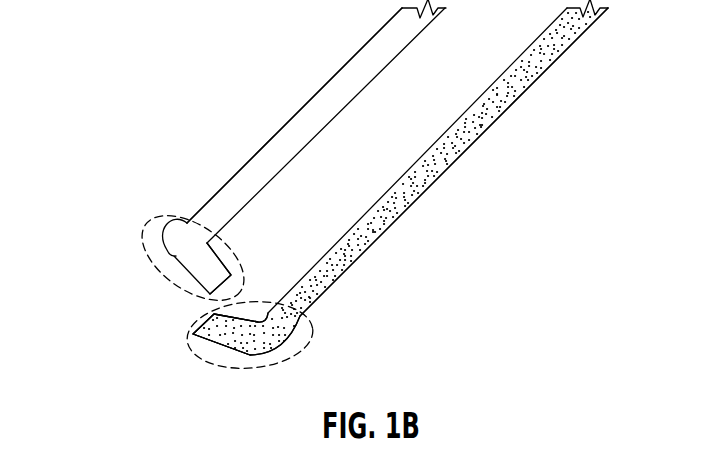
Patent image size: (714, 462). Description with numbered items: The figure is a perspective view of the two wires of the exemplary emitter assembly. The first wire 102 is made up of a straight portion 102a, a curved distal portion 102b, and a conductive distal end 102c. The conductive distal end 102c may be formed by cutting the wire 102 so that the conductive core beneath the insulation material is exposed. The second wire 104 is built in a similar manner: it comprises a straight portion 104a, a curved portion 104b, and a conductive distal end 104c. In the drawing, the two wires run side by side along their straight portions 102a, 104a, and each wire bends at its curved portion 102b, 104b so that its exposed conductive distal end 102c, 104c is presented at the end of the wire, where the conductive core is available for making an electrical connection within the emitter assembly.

The wire 102 is at (323, 131).
The straight portion 102a is at (250, 160).
The curved distal portion 102b is at (150, 221).
The conductive distal end 102c is at (238, 266).
The wire 104 is at (469, 107).
The straight portion 104a is at (356, 261).
The curved portion 104b is at (303, 358).
The conductive distal end 104c is at (201, 322).